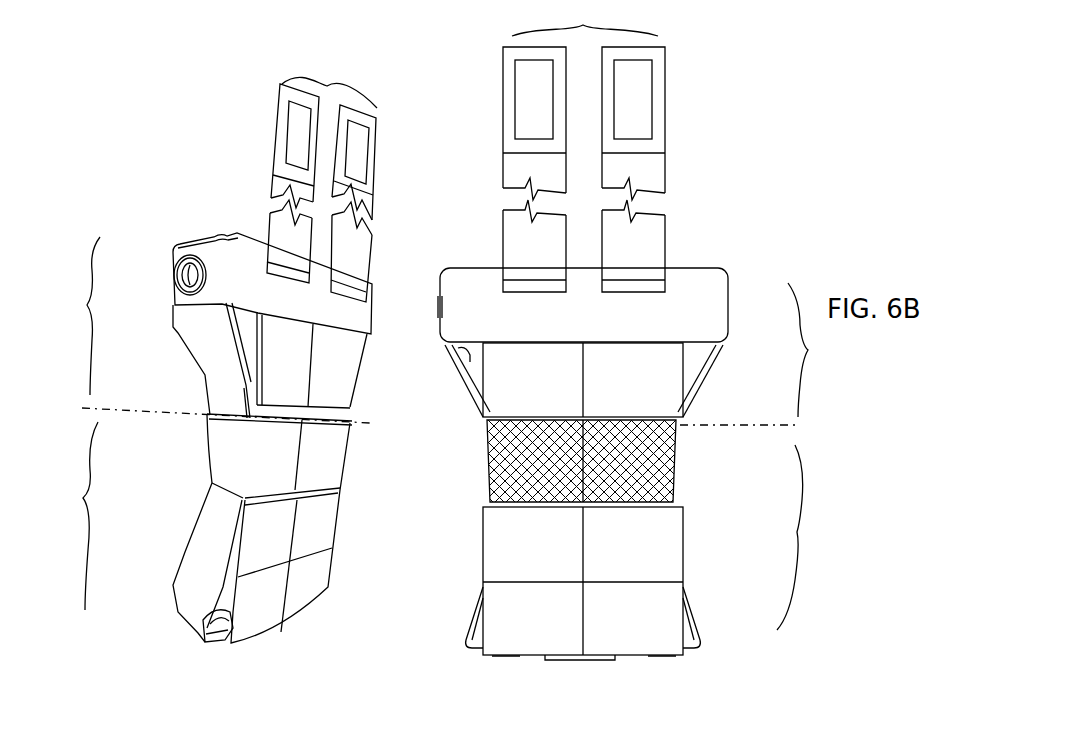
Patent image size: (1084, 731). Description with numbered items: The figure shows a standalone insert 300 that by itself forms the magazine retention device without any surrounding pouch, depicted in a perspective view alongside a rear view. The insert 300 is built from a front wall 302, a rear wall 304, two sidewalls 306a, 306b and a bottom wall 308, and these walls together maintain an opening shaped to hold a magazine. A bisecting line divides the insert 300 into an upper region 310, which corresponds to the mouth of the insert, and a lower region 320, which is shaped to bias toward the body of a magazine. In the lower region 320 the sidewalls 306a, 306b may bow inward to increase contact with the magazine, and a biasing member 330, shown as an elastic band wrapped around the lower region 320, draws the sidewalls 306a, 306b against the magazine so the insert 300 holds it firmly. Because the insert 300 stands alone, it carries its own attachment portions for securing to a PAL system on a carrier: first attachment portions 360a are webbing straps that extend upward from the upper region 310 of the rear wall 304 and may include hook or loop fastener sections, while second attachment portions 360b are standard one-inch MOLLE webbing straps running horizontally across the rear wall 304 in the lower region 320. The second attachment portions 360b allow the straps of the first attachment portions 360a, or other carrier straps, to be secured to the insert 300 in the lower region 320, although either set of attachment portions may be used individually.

The insert 300 is at (118, 196).
The front wall 302 is at (168, 298).
The rear wall 304 is at (253, 238).
The sidewall 306a is at (705, 386).
The sidewall 306b is at (185, 363).
The bottom wall 308 is at (222, 643).
The upper region 310 is at (450, 327).
The lower region 320 is at (442, 526).
The biasing member 330 is at (213, 443).
The first attachment portions 360a is at (466, 152).
The second attachment portions 360b is at (362, 365).